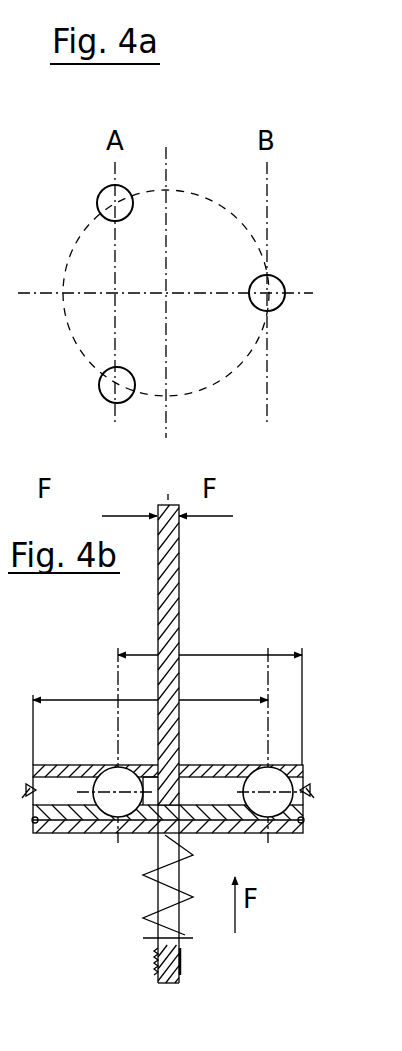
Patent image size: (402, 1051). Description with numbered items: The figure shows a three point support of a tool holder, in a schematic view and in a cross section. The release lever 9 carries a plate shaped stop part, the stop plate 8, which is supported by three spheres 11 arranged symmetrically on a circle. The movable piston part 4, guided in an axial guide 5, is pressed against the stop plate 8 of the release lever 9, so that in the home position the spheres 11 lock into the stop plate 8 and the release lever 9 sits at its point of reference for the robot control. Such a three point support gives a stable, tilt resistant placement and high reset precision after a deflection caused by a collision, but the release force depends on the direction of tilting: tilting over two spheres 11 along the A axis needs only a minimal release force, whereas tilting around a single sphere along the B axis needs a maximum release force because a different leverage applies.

The piston part 4 is at (180, 927).
The axial guide 5 is at (180, 962).
The stop plate 8 is at (72, 813).
The release lever 9 is at (179, 578).
The spheres 11 is at (277, 800).